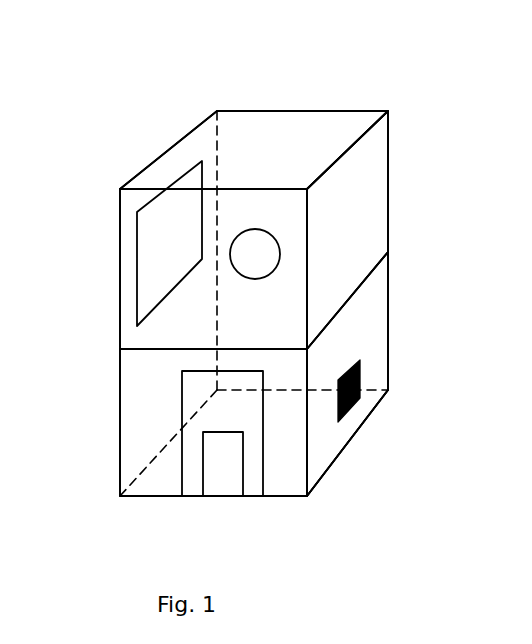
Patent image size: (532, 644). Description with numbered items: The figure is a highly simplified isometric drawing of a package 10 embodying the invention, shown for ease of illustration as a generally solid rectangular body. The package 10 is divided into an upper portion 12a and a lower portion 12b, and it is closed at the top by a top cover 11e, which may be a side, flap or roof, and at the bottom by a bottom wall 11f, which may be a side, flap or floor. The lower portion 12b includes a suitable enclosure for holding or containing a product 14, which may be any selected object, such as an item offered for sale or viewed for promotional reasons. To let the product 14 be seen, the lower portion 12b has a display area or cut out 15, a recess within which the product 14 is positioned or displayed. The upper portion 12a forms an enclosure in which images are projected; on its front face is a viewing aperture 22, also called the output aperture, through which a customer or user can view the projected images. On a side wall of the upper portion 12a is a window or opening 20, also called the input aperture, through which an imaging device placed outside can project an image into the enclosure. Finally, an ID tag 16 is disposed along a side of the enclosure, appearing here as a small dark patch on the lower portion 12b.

The package 10 is at (508, 36).
The top cover 11e is at (252, 118).
The bottom wall 11f is at (328, 445).
The upper portion 12a is at (361, 183).
The lower portion 12b is at (370, 335).
The product 14 is at (230, 483).
The display area 15 is at (193, 483).
The ID tag 16 is at (362, 390).
The window 20 is at (163, 261).
The viewing aperture 22 is at (263, 252).